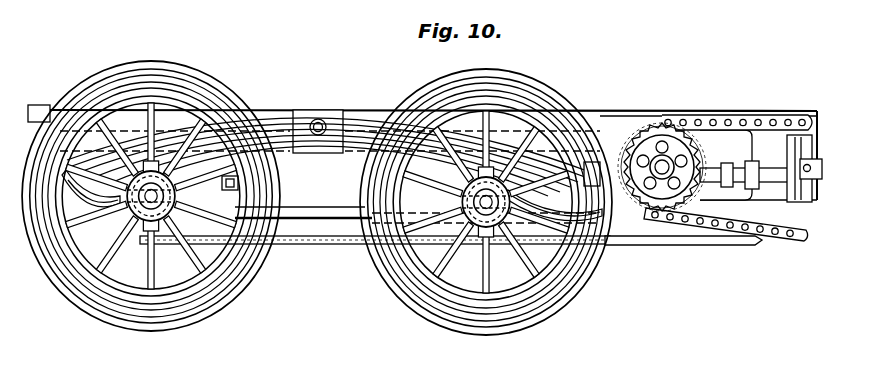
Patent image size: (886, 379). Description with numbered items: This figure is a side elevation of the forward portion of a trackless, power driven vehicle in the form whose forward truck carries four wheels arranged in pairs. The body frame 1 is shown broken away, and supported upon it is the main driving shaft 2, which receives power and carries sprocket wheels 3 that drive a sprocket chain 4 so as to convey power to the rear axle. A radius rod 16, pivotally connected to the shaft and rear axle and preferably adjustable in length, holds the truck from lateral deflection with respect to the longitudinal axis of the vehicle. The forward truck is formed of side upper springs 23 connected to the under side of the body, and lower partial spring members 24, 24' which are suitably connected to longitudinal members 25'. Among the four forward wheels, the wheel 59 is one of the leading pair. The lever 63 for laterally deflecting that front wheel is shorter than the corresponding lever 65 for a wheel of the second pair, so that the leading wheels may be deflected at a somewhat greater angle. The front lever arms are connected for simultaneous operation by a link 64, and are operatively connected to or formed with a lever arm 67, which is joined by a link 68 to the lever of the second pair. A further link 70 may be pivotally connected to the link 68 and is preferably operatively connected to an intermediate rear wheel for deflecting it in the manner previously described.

The body frame 1 is at (273, 109).
The main driving shaft 2 is at (645, 205).
The sprocket wheel 3 is at (657, 133).
The sprocket chain 4 is at (762, 118).
The radius rod 16 is at (781, 188).
The upper spring 23 is at (128, 157).
The lower partial spring member 24 is at (140, 202).
The lower partial spring member 24' is at (504, 202).
The longitudinal member 25' is at (417, 239).
The wheel 59 is at (235, 60).
The lever 63 is at (213, 190).
The link 64 is at (238, 184).
The lever 65 is at (412, 270).
The lever arm 67 is at (126, 224).
The link 68 is at (341, 247).
The link 70 is at (645, 246).